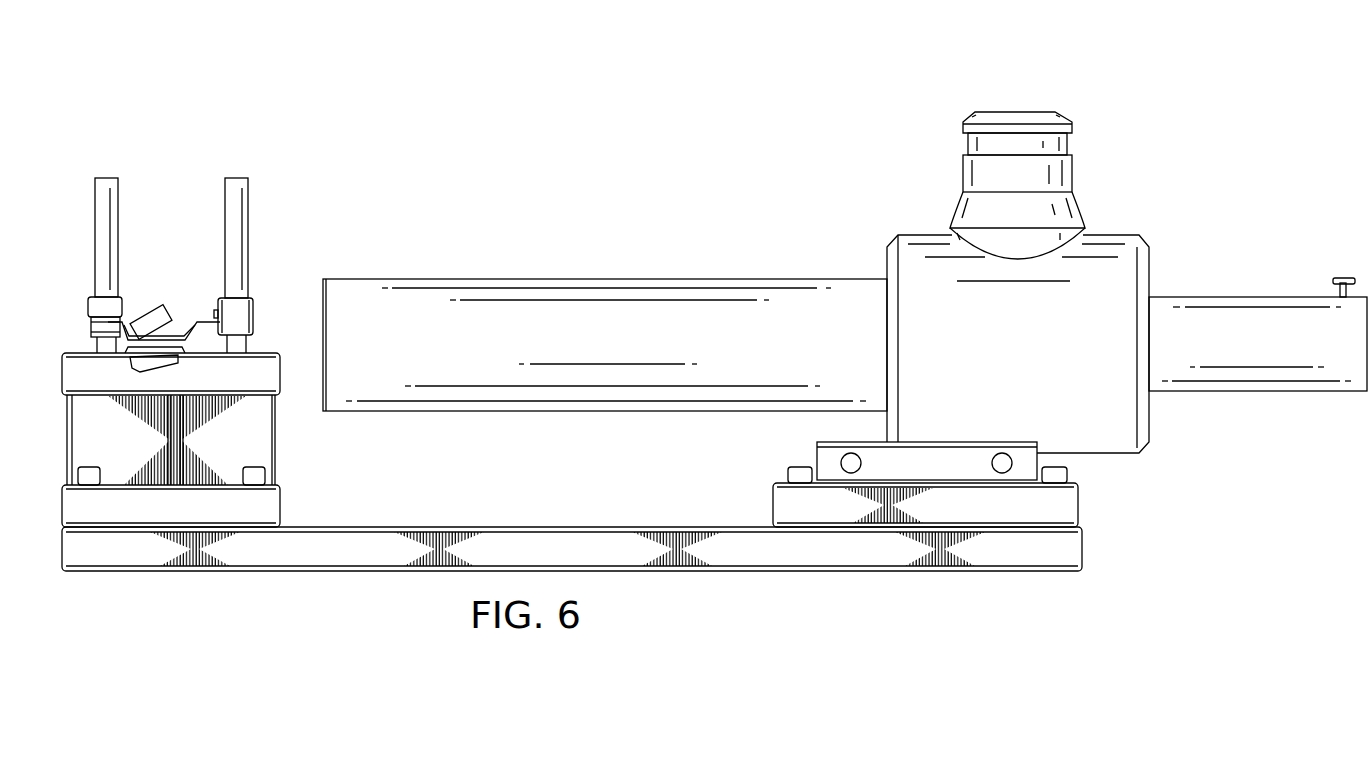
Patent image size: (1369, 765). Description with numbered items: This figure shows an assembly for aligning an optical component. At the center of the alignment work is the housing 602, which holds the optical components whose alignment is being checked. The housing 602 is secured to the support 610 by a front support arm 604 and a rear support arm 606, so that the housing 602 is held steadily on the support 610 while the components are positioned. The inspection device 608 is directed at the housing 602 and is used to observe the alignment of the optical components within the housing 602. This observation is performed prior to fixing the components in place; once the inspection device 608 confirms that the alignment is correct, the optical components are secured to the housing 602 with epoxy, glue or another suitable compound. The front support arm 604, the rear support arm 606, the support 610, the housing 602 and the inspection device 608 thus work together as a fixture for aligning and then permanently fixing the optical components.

The housing 602 is at (192, 322).
The right clamp 604 is at (253, 315).
The rear support arm 606 is at (88, 308).
The inspection device 608 is at (813, 354).
The support 610 is at (262, 381).